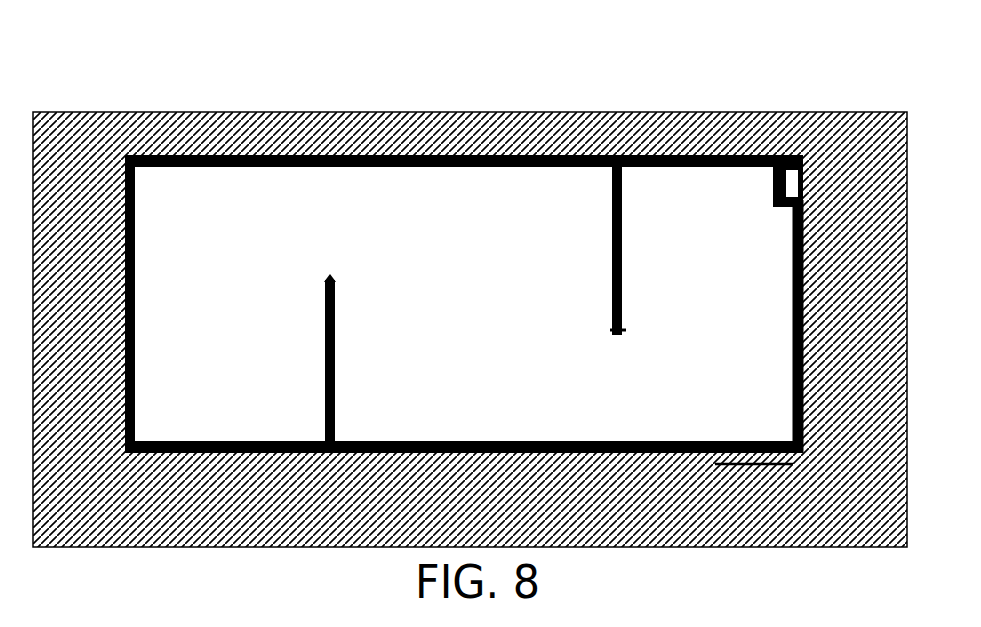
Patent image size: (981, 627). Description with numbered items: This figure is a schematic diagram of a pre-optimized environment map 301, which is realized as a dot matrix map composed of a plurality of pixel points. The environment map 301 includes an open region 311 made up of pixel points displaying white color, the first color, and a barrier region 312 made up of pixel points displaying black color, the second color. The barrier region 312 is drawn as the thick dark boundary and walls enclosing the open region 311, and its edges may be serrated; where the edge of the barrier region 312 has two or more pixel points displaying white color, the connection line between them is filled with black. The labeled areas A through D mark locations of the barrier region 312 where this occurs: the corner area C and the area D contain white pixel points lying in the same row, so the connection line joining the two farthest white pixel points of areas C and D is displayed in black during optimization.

The environment map 301 is at (92, 86).
The open region 311 is at (667, 222).
The barrier region 312 is at (400, 112).